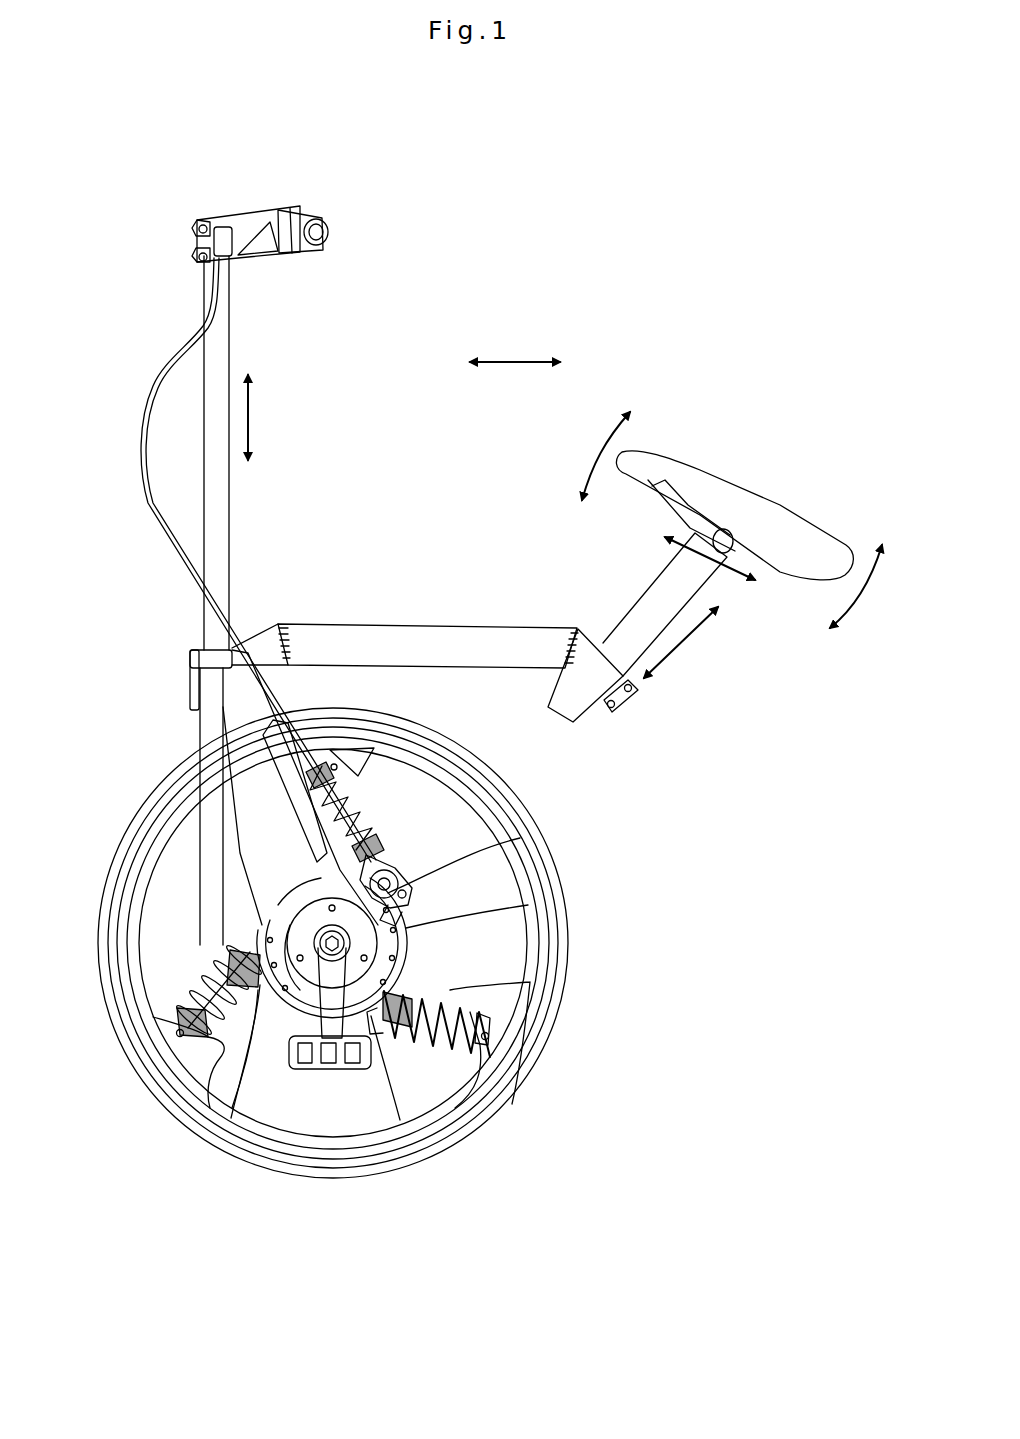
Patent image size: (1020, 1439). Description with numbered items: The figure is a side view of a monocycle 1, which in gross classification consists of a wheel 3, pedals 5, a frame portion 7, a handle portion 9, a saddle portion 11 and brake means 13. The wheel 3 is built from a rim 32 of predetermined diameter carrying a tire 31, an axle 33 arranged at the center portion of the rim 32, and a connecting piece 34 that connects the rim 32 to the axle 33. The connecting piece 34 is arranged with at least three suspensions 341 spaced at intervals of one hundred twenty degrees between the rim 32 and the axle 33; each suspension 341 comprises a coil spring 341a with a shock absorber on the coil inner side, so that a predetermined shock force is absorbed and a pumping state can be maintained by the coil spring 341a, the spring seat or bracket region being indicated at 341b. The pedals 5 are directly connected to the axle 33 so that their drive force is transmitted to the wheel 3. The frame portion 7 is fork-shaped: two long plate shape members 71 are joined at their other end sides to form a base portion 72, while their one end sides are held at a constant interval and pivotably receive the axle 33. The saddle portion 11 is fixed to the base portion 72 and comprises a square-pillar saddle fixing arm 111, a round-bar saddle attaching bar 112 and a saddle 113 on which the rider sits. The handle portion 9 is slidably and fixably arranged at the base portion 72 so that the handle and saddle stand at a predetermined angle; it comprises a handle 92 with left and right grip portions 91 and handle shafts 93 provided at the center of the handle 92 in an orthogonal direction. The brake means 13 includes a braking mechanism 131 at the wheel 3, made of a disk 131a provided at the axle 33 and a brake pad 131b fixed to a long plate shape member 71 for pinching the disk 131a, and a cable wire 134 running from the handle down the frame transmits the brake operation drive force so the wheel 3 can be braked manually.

The monocycle 1 is at (549, 205).
The wheel 3 is at (533, 1180).
The tire 31 is at (478, 1132).
The rim 32 is at (425, 1135).
The axle 33 is at (393, 1080).
The connecting piece 34 is at (355, 792).
The suspension 341 is at (672, 935).
The coil spring 341a is at (452, 992).
The spring bracket 341b is at (417, 942).
The pedal 5 is at (330, 1072).
The frame portion 7 is at (180, 725).
The long plate shape member 71 is at (273, 843).
The base portion 72 is at (213, 676).
The handle portion 9 is at (427, 207).
The grip portion 91 is at (325, 230).
The handle 92 is at (292, 253).
The handle shaft 93 is at (232, 316).
The saddle portion 11 is at (578, 510).
The saddle fixing arm 111 is at (362, 637).
The saddle attaching bar 112 is at (636, 622).
The saddle 113 is at (637, 468).
The brake means 13 is at (128, 460).
The braking mechanism 131 is at (672, 820).
The disk 131a is at (408, 930).
The brake pad 131b is at (385, 900).
The brake cable 134 is at (165, 375).